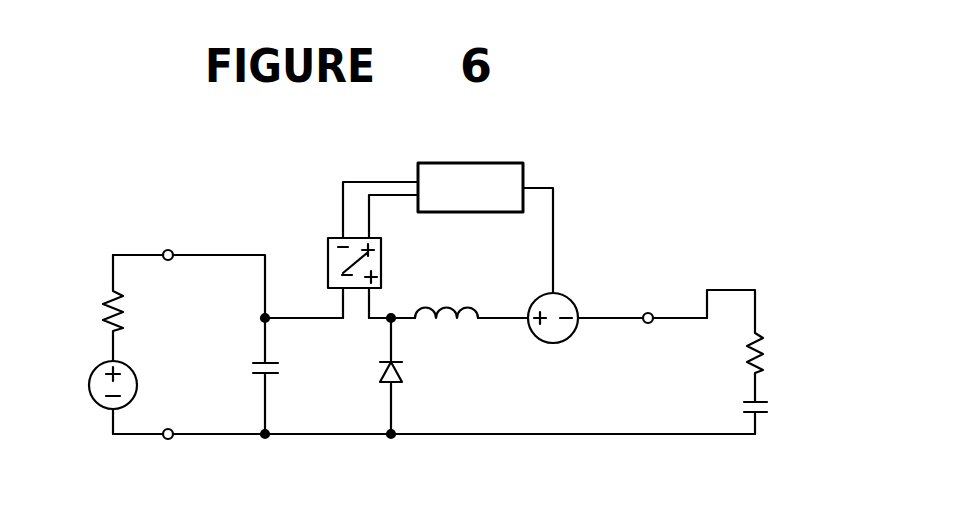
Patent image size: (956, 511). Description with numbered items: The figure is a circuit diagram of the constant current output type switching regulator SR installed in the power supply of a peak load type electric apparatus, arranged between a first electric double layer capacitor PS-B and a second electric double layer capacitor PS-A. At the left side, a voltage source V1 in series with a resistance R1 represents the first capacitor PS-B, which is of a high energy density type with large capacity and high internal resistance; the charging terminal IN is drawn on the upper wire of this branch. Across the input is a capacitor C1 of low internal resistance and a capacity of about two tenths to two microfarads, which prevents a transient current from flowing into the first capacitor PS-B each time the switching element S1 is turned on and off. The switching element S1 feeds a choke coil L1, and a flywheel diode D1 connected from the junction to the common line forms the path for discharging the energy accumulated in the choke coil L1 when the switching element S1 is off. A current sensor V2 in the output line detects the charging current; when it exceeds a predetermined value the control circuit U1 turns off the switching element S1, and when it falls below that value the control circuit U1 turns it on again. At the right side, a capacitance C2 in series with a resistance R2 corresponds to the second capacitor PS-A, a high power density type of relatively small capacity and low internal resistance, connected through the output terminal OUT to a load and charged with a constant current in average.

The charging terminal IN is at (146, 326).
The internal resistance of first capacitor R1 is at (92, 315).
The first electric double layer capacitor PS-B is at (65, 330).
The voltage source of first capacitor V1 is at (96, 386).
The capacitor C1 is at (251, 376).
The switching element S1 is at (354, 250).
The control circuit U1 is at (485, 213).
The choke coil L1 is at (432, 297).
The flywheel diode D1 is at (414, 378).
The current sensor V2 is at (568, 308).
The switching regulator SR is at (612, 267).
The output terminal OUT is at (686, 324).
The internal resistance of second capacitor R2 is at (780, 360).
The second electric double layer capacitor PS-A is at (798, 368).
The capacitance of second capacitor C2 is at (779, 406).